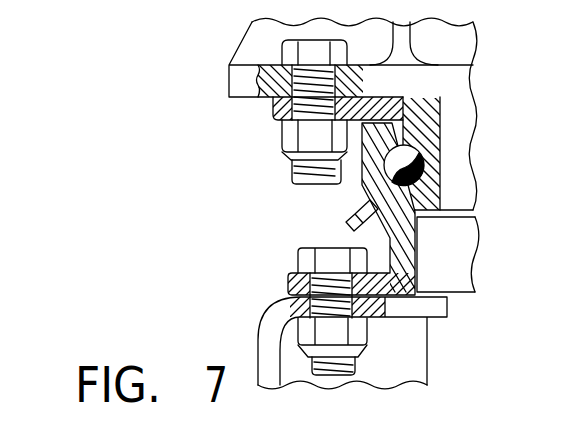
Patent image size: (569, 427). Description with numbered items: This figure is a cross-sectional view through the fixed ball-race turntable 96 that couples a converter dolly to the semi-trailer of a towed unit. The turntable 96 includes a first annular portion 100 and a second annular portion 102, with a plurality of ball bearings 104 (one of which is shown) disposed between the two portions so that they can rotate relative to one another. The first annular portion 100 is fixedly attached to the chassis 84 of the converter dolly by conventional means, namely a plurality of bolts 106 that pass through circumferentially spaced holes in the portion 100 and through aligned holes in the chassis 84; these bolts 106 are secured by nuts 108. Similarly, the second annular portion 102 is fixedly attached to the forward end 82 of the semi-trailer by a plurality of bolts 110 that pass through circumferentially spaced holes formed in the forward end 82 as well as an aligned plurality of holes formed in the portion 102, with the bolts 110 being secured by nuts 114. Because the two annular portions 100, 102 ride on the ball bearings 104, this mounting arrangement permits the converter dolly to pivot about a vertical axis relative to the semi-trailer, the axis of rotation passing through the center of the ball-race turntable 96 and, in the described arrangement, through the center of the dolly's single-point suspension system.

The forward end 82 is at (458, 80).
The second annular portion 102 is at (433, 137).
The first annular portion 100 is at (405, 253).
The ball bearings 104 is at (382, 177).
The bolts 110 is at (283, 53).
The nuts 114 is at (282, 137).
The bolts 106 is at (303, 263).
The nuts 108 is at (303, 337).
The chassis 84 is at (258, 360).
The fixed ball-race turntable 96 is at (196, 163).